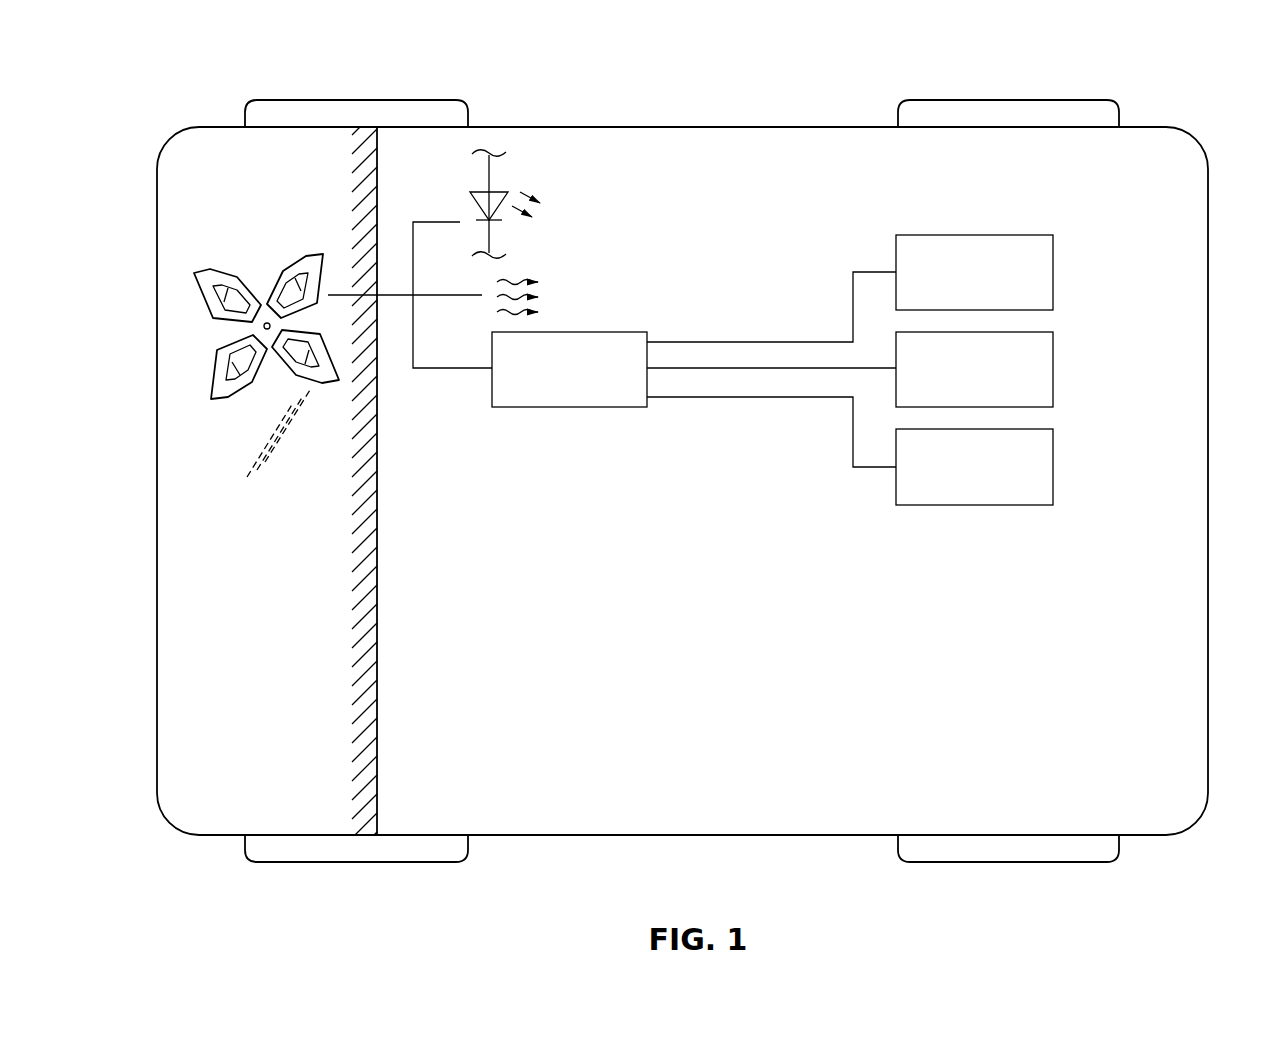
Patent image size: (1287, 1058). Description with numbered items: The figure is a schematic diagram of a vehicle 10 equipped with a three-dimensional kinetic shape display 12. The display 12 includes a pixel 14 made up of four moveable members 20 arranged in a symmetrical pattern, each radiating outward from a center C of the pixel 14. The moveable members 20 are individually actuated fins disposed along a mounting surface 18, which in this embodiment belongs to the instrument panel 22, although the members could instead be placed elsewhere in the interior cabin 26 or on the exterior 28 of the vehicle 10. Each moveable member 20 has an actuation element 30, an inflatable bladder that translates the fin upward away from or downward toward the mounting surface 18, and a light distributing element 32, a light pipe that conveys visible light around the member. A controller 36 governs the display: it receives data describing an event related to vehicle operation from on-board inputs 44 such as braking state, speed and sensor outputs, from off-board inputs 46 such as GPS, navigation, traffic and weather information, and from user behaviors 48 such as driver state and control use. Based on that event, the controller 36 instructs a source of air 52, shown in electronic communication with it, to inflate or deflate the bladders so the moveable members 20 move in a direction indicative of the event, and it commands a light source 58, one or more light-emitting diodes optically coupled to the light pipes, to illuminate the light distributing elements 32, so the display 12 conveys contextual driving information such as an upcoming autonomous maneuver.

The vehicle 10 is at (1178, 79).
The three-dimensional kinetic shape display 12 is at (562, 160).
The pixel 14 is at (216, 337).
The mounting surface 18 is at (236, 634).
The moveable member 20 is at (224, 263).
The instrument panel 22 is at (391, 632).
The interior cabin 26 is at (1029, 615).
The exterior 28 is at (502, 838).
The actuation element 30 is at (215, 290).
The light distributing element 32 is at (208, 277).
The controller 36 is at (607, 332).
The on-board inputs 44 is at (1053, 272).
The off-board inputs 46 is at (1053, 369).
The user behaviors 48 is at (1053, 466).
The source of air 52 is at (549, 297).
The light source 58 is at (549, 213).
The center C is at (263, 325).